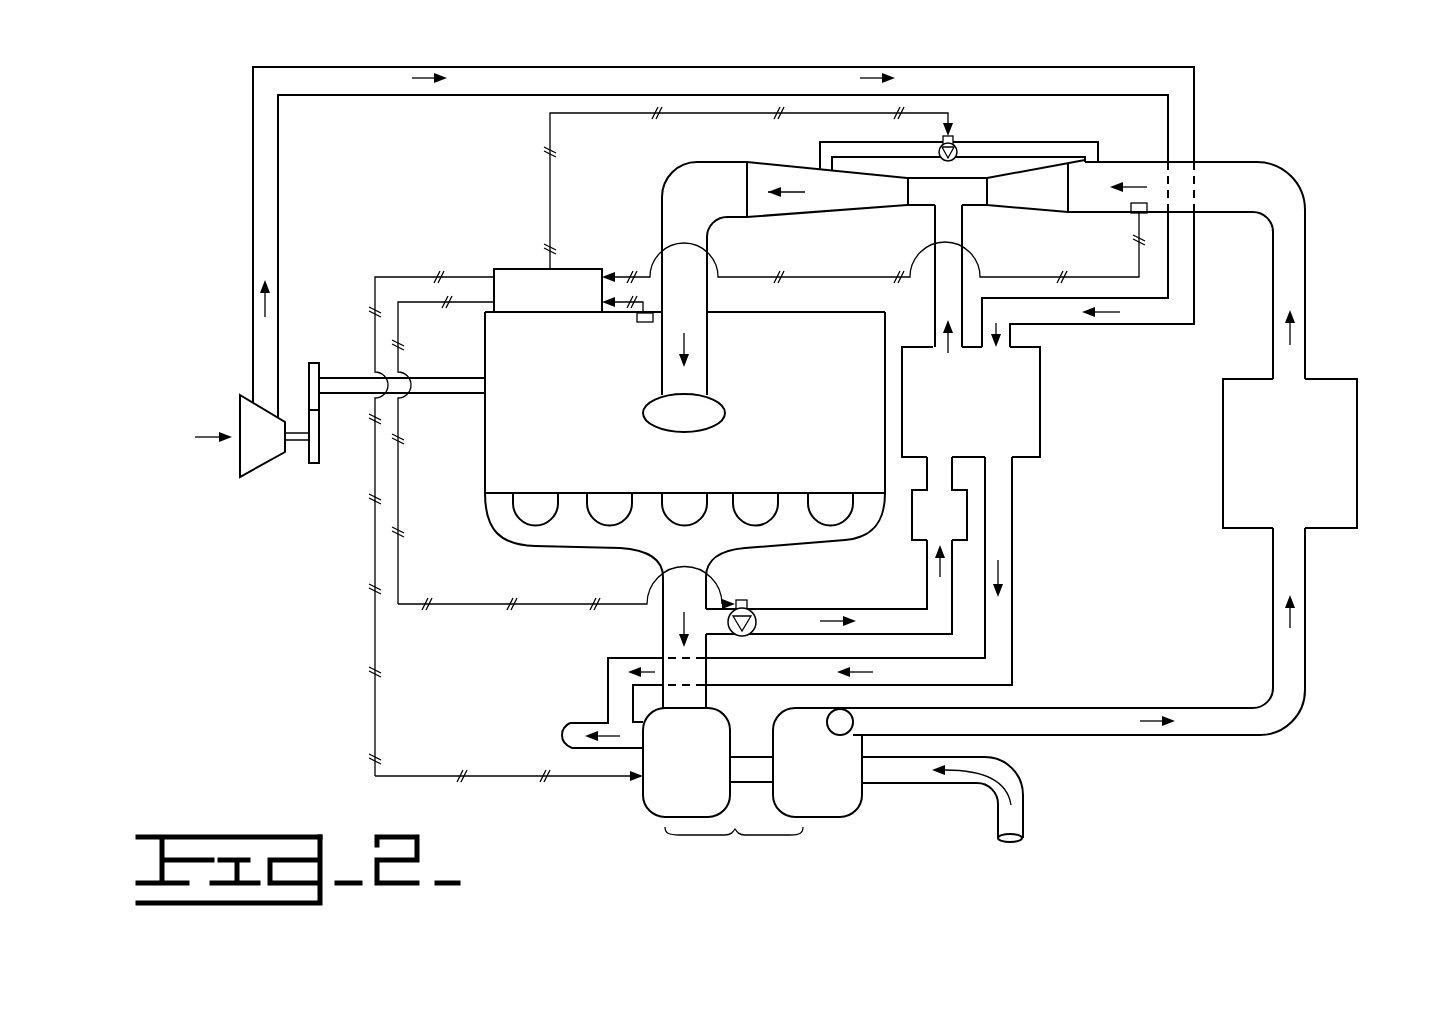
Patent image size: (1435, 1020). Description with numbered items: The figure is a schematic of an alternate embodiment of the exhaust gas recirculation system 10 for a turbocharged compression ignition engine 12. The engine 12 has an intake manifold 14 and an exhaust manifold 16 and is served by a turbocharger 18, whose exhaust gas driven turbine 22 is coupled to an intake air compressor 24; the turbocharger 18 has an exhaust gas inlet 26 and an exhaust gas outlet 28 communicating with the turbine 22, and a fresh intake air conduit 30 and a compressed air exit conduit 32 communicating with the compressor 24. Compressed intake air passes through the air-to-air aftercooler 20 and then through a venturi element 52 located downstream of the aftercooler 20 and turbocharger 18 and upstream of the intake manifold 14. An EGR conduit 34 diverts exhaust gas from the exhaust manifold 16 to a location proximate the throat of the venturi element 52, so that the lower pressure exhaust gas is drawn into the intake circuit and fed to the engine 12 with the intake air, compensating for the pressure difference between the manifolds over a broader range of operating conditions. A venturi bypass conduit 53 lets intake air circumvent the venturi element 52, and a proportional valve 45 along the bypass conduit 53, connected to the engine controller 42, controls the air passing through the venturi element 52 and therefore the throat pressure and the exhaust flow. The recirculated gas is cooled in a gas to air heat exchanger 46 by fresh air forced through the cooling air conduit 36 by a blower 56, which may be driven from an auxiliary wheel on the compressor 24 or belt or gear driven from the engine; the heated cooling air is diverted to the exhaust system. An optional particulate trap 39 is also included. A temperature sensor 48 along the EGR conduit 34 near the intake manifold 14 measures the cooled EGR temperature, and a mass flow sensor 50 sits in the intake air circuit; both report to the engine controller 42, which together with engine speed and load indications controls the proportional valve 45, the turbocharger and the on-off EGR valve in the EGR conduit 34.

The exhaust gas recirculation (EGR) system 10 is at (422, 192).
The turbocharged compression ignition engine 12 is at (527, 432).
The intake manifold 14 is at (702, 417).
The exhaust manifold 16 is at (677, 547).
The turbocharger 18 is at (715, 845).
The air-to-air aftercooler 20 is at (1357, 485).
The exhaust gas driven turbine 22 is at (665, 805).
The intake air compressor 24 is at (818, 795).
The exhaust gas inlet 26 is at (705, 695).
The exhaust gas outlet 28 is at (583, 722).
The fresh intake air conduit 30 is at (1023, 768).
The compressed air exit conduit 32 is at (1110, 735).
The EGR conduit 34 is at (823, 610).
The cooling air conduit 36 is at (1012, 640).
The particulate trap 39 is at (912, 528).
The engine controller 42 is at (494, 307).
The proportional valve 45 is at (960, 140).
The gas to air heat exchanger 46 is at (951, 411).
The temperature sensor 48 is at (635, 320).
The mass flow sensor 50 is at (1130, 207).
The venturi element 52 is at (923, 193).
The venturi bypass conduit 53 is at (825, 150).
The blower 56 is at (263, 457).